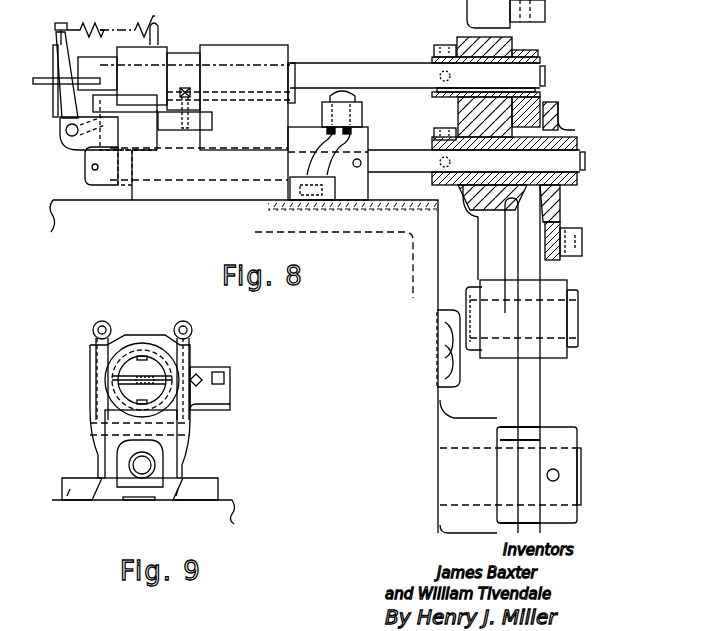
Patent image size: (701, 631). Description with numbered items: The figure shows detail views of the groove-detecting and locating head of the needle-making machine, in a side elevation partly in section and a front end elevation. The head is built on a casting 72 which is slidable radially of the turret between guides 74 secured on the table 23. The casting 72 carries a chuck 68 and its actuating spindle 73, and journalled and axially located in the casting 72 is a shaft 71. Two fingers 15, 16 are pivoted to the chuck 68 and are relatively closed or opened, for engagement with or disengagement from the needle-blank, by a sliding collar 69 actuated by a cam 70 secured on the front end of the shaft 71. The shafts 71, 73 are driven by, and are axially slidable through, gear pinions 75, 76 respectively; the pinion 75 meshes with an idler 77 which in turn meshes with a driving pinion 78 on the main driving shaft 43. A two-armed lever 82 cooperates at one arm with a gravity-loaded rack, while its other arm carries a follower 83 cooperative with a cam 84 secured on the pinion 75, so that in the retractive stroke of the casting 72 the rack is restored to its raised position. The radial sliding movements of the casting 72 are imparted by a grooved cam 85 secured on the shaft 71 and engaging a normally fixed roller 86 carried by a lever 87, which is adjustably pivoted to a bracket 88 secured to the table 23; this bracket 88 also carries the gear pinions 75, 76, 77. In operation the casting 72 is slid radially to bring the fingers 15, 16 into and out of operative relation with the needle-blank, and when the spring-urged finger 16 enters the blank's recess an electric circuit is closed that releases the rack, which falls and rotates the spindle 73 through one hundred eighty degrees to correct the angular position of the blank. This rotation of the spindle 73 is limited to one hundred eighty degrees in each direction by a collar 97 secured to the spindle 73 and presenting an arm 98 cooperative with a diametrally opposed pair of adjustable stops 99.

In FIG. 9, the finger 15 is at (142, 388).
In FIG. 8, the finger 16 is at (38, 85).
In FIG. 9, the finger 16 is at (142, 387).
In FIG. 8, the table 23 is at (62, 201).
In FIG. 9, the table 23 is at (222, 499).
In FIG. 8, the main driving shaft 43 is at (575, 433).
In FIG. 8, the chuck 68 is at (54, 64).
In FIG. 9, the chuck 68 is at (142, 380).
In FIG. 8, the sliding collar 69 is at (60, 110).
In FIG. 9, the sliding collar 69 is at (112, 366).
In FIG. 8, the cam 70 is at (92, 186).
In FIG. 9, the cam 70 is at (162, 454).
In FIG. 8, the shaft 71 is at (408, 160).
In FIG. 9, the shaft 71 is at (142, 465).
In FIG. 8, the casting 72 is at (197, 112).
In FIG. 9, the casting 72 is at (172, 472).
In FIG. 8, the actuating spindle 73 is at (417, 75).
In FIG. 8, the guides 74 is at (196, 197).
In FIG. 9, the guides 74 is at (75, 482).
In FIG. 8, the gear pinion 75 is at (504, 136).
In FIG. 8, the gear pinion 76 is at (537, 54).
In FIG. 8, the idler 77 is at (528, 272).
In FIG. 8, the driving pinion 78 is at (527, 518).
In FIG. 8, the two-armed lever 82 is at (512, 324).
In FIG. 8, the follower 83 is at (561, 222).
In FIG. 8, the cam 84 is at (522, 359).
In FIG. 8, the grooved cam 85 is at (365, 188).
In FIG. 8, the roller 86 is at (333, 126).
In FIG. 8, the lever 87 is at (362, 113).
In FIG. 8, the bracket 88 is at (487, 232).
In FIG. 8, the collar 97 is at (175, 54).
In FIG. 8, the arm 98 is at (196, 80).
In FIG. 8, the adjustable stops 99 is at (190, 97).